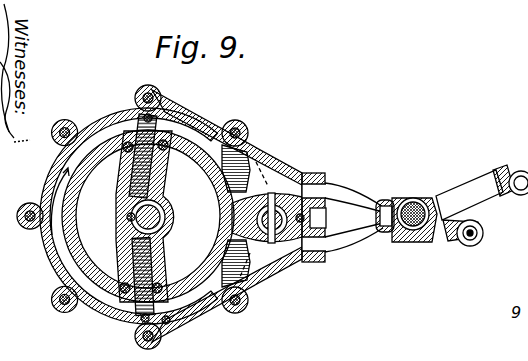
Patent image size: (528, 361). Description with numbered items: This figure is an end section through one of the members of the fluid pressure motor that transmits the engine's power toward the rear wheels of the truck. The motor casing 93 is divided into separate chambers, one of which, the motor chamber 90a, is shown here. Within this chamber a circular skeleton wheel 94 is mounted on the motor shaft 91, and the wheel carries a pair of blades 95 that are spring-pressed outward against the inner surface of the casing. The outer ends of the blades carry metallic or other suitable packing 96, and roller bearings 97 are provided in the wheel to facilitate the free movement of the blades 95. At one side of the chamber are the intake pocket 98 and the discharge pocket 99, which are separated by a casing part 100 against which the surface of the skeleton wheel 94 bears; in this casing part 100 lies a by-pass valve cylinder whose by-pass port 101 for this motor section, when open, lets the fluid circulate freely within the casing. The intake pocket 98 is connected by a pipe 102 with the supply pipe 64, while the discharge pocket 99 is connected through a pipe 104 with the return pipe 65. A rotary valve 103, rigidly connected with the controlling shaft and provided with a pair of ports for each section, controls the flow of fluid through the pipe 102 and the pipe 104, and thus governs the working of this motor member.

The motor chamber 90a is at (92, 142).
The roller bearings 97 is at (130, 140).
The discharge pocket 99 is at (276, 182).
The by-pass port 101 is at (294, 196).
The pipe 104 is at (348, 196).
The rotary valve 103 is at (422, 208).
The return pipe 65 is at (518, 187).
The supply pipe 64 is at (470, 246).
The pipe 102 is at (358, 240).
The intake pocket 98 is at (285, 258).
The casing part 100 is at (222, 237).
The motor shaft 91 is at (160, 215).
The circular skeleton wheel 94 is at (82, 253).
The motor casing 93 is at (92, 318).
The blades 95 is at (137, 301).
The packing 96 is at (166, 323).